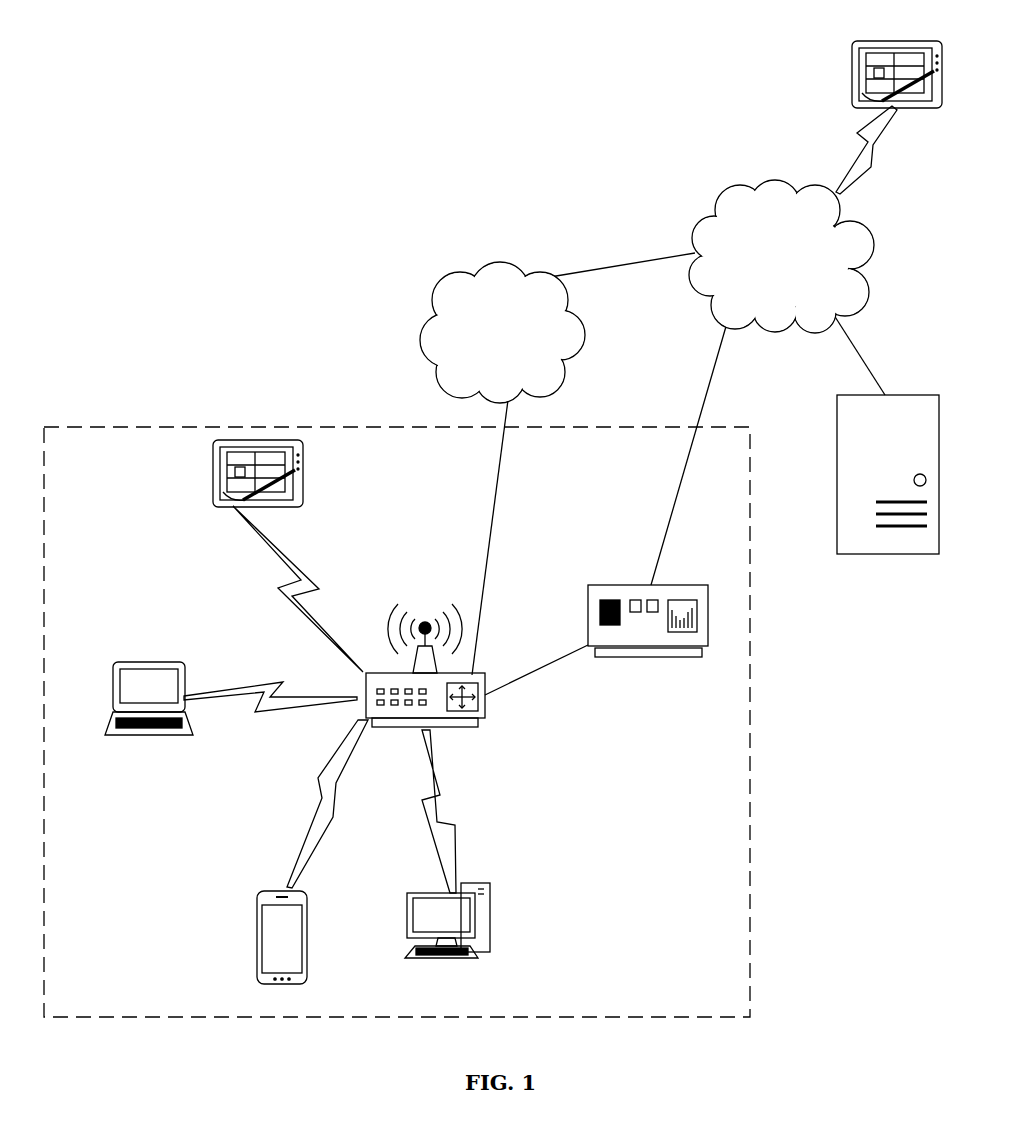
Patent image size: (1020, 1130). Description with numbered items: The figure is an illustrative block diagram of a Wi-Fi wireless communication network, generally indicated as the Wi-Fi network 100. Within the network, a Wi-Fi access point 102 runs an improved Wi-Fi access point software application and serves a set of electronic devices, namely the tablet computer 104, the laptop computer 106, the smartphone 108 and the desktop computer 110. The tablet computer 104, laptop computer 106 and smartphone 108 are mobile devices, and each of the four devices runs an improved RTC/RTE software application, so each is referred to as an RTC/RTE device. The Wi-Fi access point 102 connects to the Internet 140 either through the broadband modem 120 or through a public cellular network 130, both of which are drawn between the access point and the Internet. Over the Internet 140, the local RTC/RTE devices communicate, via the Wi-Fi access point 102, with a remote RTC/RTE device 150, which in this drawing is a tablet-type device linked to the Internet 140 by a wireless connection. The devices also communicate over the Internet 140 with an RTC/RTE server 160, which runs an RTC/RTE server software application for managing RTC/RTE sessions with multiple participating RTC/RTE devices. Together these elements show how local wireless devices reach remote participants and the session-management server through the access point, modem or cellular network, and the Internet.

The Wi-Fi network 100 is at (162, 426).
The Wi-Fi access point 102 is at (478, 728).
The tablet computer 104 is at (303, 490).
The laptop computer 106 is at (113, 683).
The smartphone 108 is at (257, 927).
The desktop computer 110 is at (492, 947).
The broadband modem 120 is at (655, 658).
The public cellular network 130 is at (422, 330).
The Internet 140 is at (698, 222).
The remote RTC/RTE device 150 is at (852, 50).
The RTC/RTE server 160 is at (883, 555).